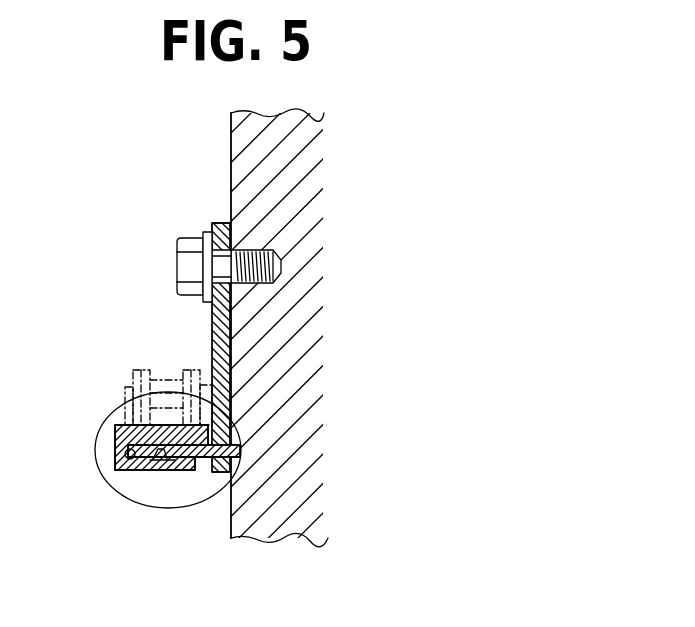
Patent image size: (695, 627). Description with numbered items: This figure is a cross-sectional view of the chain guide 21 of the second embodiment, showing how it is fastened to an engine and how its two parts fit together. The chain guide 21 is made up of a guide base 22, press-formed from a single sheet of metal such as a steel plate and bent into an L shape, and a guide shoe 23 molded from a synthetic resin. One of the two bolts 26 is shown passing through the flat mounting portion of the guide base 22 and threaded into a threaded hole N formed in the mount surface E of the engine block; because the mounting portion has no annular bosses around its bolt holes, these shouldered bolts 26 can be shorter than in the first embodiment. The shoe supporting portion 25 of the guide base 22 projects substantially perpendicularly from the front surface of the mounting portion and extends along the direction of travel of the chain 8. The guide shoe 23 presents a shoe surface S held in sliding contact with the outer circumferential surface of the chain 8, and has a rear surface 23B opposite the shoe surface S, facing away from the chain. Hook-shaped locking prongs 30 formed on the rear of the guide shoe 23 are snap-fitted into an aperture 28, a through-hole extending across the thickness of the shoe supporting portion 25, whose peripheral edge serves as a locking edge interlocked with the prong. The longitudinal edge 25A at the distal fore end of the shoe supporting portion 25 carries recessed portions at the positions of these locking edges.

The mount surface E is at (230, 153).
The threaded holes N is at (280, 264).
The bolts 26 is at (177, 244).
The guide base 22 is at (203, 322).
The chain 8 is at (143, 370).
The aperture 28 is at (238, 447).
The guide shoe 23 is at (108, 440).
The longitudinal edge 25A is at (126, 470).
The locking prongs 30 is at (190, 472).
The rear surface 23B is at (163, 473).
The shoe supporting portion 25 is at (233, 480).
The chain guide 21 is at (124, 482).
The shoe surface S is at (112, 397).